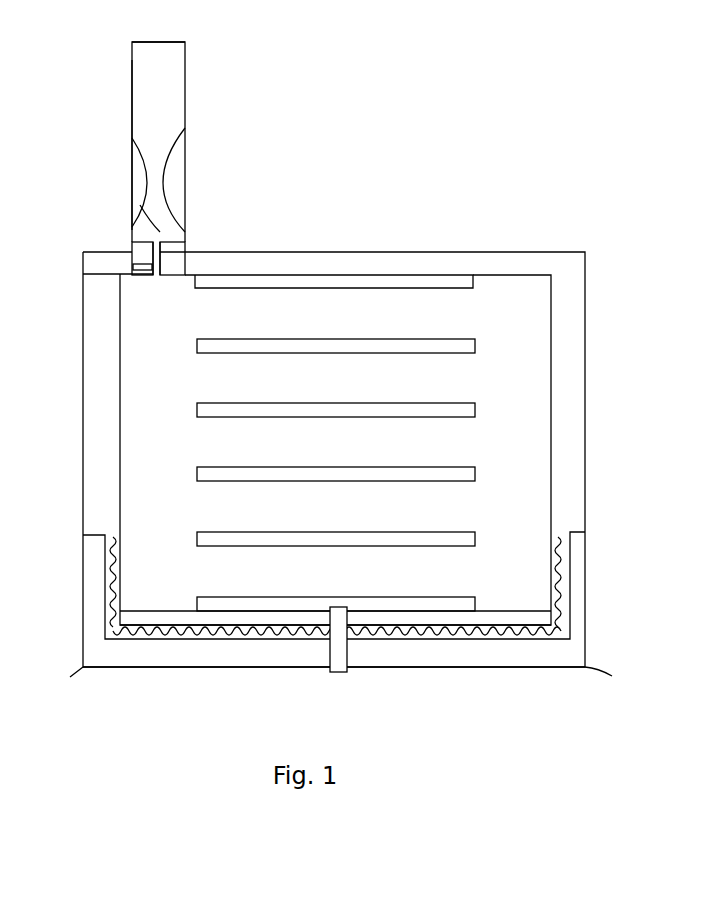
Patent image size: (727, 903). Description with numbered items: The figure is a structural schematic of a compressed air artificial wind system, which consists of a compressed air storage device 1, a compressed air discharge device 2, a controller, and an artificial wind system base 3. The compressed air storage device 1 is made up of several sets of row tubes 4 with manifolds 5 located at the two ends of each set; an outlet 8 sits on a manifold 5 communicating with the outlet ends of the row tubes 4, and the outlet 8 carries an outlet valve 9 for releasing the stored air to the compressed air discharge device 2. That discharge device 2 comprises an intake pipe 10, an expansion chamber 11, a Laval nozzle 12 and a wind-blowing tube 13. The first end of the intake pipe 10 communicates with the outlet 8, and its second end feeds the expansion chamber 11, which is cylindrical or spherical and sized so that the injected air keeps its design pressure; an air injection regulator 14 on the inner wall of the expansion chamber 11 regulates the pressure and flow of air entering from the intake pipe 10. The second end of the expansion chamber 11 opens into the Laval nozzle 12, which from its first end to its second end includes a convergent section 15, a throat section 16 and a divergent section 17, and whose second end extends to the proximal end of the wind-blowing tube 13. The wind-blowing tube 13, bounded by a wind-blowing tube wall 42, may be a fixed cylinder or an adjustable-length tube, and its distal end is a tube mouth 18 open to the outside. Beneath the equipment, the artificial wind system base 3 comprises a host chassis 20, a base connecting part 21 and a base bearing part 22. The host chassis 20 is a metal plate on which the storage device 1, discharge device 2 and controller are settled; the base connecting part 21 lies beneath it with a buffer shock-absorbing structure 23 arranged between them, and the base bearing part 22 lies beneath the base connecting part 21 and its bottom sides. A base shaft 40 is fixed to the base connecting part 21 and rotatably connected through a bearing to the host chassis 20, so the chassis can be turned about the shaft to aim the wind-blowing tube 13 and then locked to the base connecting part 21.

The compressed air storage device 1 is at (443, 200).
The compressed air discharge device 2 is at (268, 52).
The artificial wind system base 3 is at (32, 573).
The row tubes 4 is at (375, 303).
The manifolds 5 is at (486, 283).
The outlet 8 is at (153, 275).
The outlet valve 9 is at (133, 268).
The intake pipe 10 is at (157, 258).
The expansion chamber 11 is at (162, 232).
The Laval nozzle 12 is at (228, 112).
The wind-blowing tube 13 is at (170, 65).
The air injection regulator 14 is at (140, 248).
The convergent section 15 is at (157, 217).
The throat section 16 is at (157, 192).
The divergent section 17 is at (165, 147).
The tube mouth 18 is at (152, 42).
The host chassis 20 is at (168, 620).
The base connecting part 21 is at (104, 658).
The base bearing part 22 is at (103, 685).
The buffer shock-absorbing structure 23 is at (453, 630).
The base shaft 40 is at (340, 665).
The wind-blowing tube wall 42 is at (132, 93).